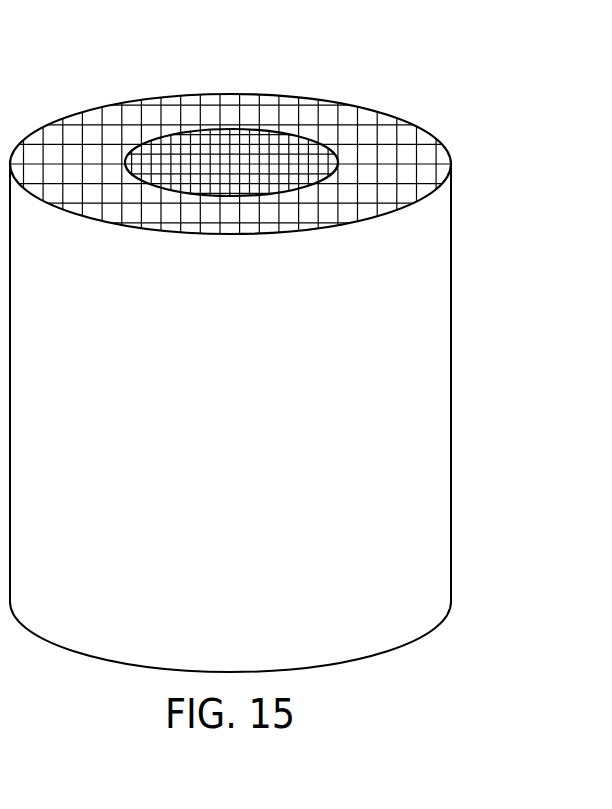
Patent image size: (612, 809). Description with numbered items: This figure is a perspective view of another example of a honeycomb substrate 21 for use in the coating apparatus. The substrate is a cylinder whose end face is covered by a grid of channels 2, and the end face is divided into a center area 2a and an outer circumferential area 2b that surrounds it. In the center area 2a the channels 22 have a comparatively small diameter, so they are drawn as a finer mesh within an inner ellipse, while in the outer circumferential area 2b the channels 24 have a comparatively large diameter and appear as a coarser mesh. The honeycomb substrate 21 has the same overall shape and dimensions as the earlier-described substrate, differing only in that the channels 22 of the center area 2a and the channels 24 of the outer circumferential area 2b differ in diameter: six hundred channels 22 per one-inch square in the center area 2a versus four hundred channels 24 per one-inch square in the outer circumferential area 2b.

The honeycomb substrate 21 is at (483, 121).
The channels 2 is at (307, 53).
The center area 2a is at (158, 137).
The outer circumferential area 2b is at (70, 116).
The channels of the center area 22 is at (227, 138).
The channels of the outer circumferential area 24 is at (288, 116).